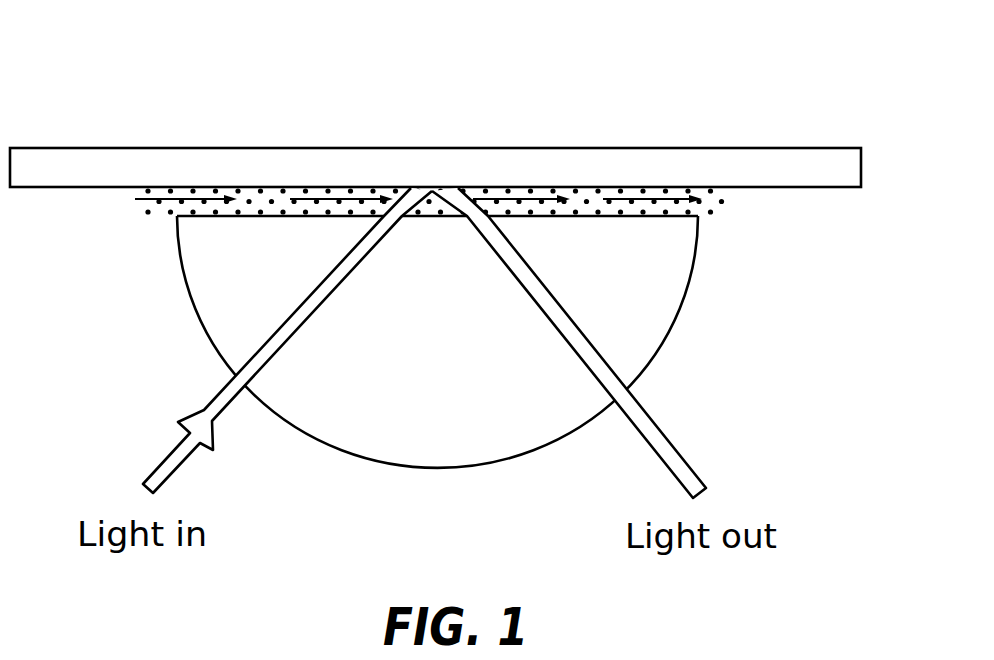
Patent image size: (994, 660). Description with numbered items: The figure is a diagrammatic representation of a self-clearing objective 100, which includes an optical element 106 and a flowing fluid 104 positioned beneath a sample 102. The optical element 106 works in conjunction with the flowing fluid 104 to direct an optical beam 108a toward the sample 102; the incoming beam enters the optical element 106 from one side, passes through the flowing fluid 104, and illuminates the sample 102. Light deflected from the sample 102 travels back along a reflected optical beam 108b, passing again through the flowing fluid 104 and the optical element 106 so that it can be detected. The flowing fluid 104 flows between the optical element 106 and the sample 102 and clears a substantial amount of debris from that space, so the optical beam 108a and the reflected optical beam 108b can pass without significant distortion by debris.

The self-clearing objective 100 is at (435, 274).
The sample 102 is at (208, 147).
The flowing fluid 104 is at (119, 188).
The optical element 106 is at (433, 469).
The optical beam 108a is at (160, 456).
The reflected optical beam 108b is at (661, 432).